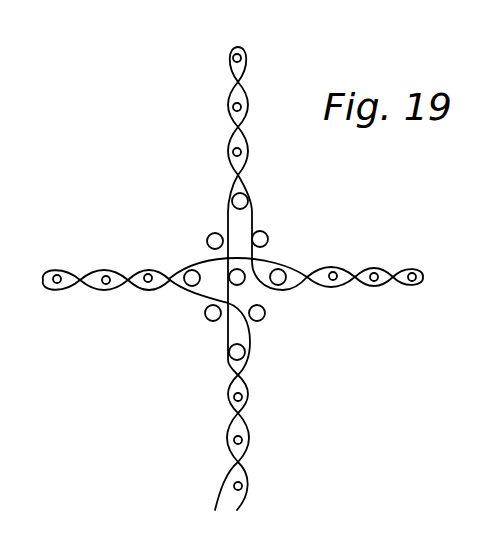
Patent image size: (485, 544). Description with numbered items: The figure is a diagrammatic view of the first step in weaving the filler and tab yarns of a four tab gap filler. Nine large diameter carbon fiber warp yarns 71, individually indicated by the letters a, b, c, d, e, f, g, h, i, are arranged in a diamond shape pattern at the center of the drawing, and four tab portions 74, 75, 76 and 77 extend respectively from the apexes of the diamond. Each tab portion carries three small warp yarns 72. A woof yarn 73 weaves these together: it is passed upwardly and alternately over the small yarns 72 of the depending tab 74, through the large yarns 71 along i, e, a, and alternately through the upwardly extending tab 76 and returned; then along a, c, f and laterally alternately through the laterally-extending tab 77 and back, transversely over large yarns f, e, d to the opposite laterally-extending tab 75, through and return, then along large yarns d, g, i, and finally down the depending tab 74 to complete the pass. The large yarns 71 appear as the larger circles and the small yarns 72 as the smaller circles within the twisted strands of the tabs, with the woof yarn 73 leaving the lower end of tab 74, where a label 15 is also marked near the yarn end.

The large diameter warp yarn 71 is at (278, 277).
The small warp yarn 72 is at (237, 152).
The woof yarn 73 is at (242, 497).
The depending tab portion 74 is at (247, 449).
The laterally-extending tab portion 75 is at (73, 272).
The upwardly extending tab portion 76 is at (247, 78).
The laterally-extending tab portion 77 is at (415, 263).
The large filler warp yarn a is at (240, 201).
The large filler warp yarn b is at (215, 241).
The large filler warp yarn c is at (260, 239).
The large filler warp yarn d is at (192, 278).
The large filler warp yarn e is at (237, 277).
The large filler warp yarn f is at (278, 277).
The large filler warp yarn g is at (213, 313).
The large filler warp yarn h is at (257, 313).
The large filler warp yarn i is at (237, 352).
The yarn end label 15 is at (222, 513).